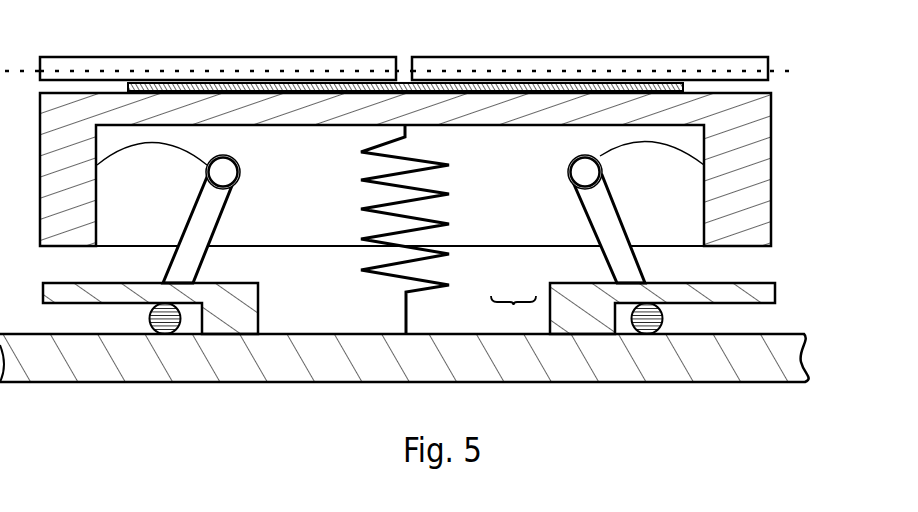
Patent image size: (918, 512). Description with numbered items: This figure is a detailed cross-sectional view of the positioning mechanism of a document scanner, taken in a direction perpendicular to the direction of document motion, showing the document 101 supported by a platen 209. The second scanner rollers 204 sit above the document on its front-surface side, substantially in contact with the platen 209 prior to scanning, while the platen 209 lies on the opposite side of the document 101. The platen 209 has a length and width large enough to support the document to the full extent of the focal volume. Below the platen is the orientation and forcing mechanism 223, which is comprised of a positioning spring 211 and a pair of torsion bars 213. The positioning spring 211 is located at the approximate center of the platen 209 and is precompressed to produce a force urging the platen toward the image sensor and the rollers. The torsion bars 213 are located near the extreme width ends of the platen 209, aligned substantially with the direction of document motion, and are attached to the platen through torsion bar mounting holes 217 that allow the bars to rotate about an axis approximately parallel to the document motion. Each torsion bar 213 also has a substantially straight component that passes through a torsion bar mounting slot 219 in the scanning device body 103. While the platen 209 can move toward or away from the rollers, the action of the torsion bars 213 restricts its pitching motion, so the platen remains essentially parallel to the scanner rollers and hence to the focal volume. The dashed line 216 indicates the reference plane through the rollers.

The document 101 is at (493, 84).
The scanning device body 103 is at (742, 281).
The second scanner rollers 204 is at (217, 62).
The platen 209 is at (771, 113).
The positioning spring 211 is at (446, 255).
The torsion bars 213 is at (168, 264).
The reference plane (dotted line) 216 is at (22, 70).
The torsion bar mounting holes 217 is at (60, 166).
The torsion bar mounting slot 219 is at (745, 325).
The orientation and forcing mechanism 223 is at (513, 314).